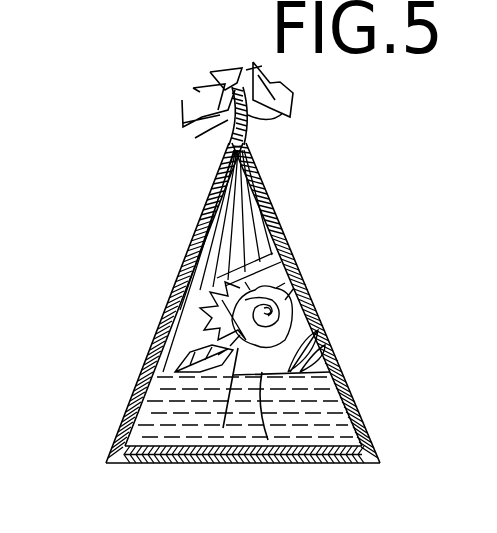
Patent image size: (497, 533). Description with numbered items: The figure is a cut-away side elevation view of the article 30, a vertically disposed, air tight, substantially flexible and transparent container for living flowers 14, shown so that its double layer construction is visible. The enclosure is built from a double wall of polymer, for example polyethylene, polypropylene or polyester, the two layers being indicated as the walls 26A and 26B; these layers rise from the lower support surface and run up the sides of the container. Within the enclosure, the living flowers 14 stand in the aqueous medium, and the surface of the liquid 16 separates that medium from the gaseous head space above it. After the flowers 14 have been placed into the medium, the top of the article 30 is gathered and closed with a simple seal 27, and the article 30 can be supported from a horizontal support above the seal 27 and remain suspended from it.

The living flowers 14 is at (232, 320).
The liquid 16 is at (152, 428).
The polymer wall 26A is at (290, 244).
The polymer wall 26B is at (320, 318).
The seal 27 is at (246, 146).
The article 30 is at (197, 222).